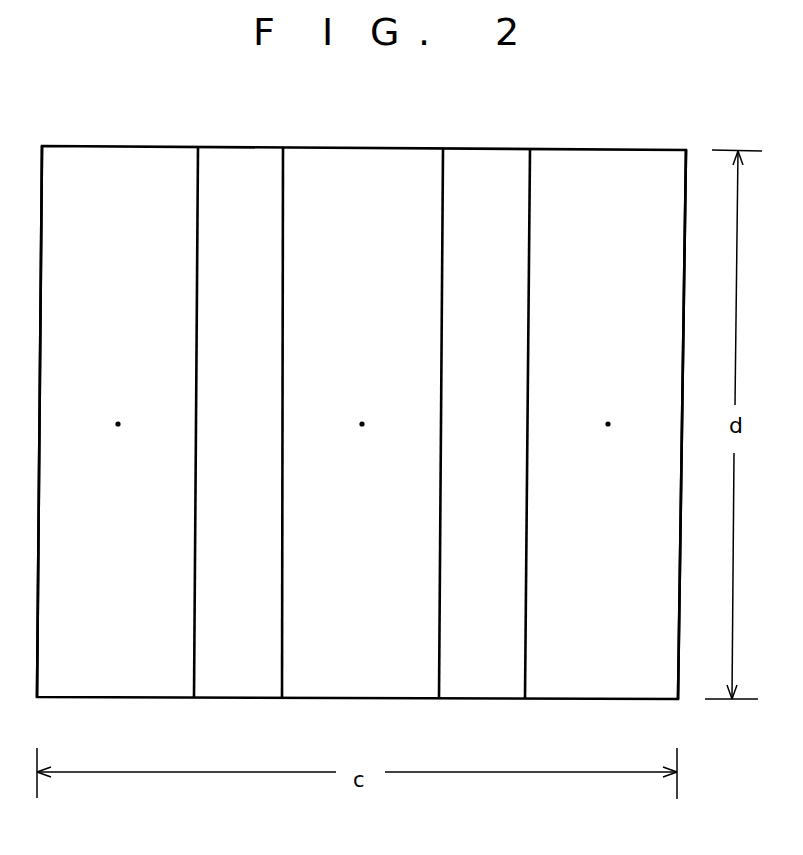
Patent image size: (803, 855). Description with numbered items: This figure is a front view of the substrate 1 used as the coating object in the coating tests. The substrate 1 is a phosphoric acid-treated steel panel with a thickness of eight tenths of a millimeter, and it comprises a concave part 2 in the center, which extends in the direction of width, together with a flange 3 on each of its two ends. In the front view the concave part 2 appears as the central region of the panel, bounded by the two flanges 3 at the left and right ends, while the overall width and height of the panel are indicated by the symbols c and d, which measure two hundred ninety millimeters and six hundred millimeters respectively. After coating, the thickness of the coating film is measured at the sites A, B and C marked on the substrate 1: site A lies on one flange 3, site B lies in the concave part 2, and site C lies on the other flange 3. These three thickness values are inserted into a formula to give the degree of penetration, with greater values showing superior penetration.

The substrate 1 is at (452, 145).
The concave part 2 is at (338, 182).
The flange 3 is at (90, 180).
The site A is at (112, 428).
The site B is at (357, 428).
The site C is at (600, 428).